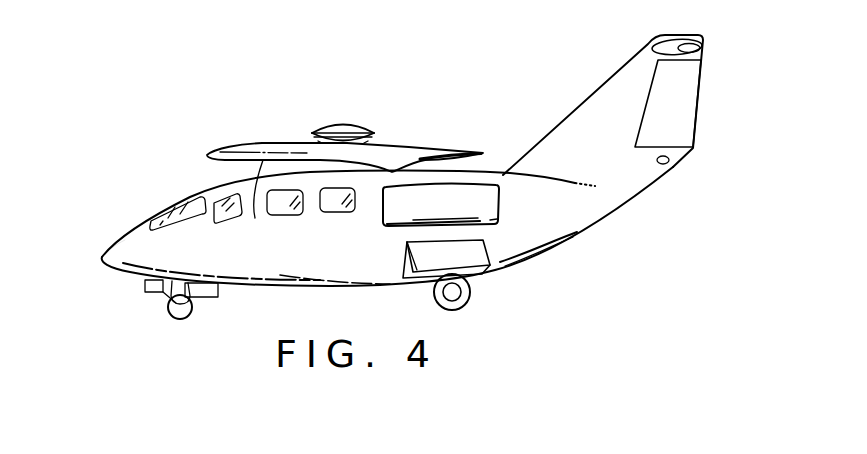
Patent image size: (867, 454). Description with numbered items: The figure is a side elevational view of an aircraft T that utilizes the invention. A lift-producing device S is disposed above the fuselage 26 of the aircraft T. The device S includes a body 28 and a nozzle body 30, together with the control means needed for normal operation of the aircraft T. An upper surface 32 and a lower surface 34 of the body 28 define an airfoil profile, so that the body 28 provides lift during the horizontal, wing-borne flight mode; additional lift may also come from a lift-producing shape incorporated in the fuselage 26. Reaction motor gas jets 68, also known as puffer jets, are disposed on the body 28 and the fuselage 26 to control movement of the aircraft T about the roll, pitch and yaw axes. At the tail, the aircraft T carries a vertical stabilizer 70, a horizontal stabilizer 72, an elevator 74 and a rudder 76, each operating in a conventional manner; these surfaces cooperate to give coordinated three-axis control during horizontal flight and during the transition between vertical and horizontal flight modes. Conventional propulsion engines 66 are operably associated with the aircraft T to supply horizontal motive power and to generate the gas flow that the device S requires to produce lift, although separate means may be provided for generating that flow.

The fuselage 26 is at (108, 253).
The body 28 is at (233, 150).
The nozzle body 30 is at (340, 120).
The upper surface 32 is at (272, 143).
The lower surface 34 is at (252, 203).
The propulsion engines 66 is at (487, 207).
The reaction motor gas jets 68 is at (675, 167).
The vertical stabilizer 70 is at (603, 105).
The horizontal stabilizer 72 is at (673, 43).
The elevator 74 is at (690, 43).
The rudder 76 is at (683, 105).
The lift-producing device S is at (370, 115).
The aircraft T is at (130, 215).